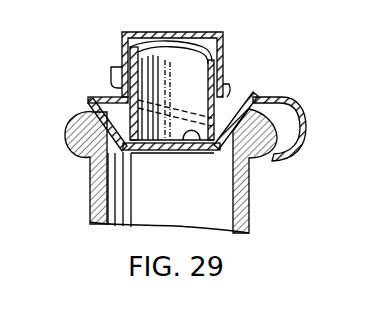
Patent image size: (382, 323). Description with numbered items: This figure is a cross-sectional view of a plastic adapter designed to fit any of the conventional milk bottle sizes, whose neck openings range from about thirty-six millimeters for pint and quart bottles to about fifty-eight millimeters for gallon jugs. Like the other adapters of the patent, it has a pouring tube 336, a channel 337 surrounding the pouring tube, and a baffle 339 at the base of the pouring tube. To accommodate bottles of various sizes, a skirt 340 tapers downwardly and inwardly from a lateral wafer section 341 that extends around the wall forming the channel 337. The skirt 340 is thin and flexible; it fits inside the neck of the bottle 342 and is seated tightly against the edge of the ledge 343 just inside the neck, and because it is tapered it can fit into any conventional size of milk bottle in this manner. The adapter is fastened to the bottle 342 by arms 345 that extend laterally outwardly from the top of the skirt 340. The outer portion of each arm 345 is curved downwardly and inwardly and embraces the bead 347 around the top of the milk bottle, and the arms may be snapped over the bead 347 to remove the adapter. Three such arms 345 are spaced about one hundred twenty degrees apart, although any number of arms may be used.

The pouring tube 336 is at (183, 67).
The channel 337 is at (111, 84).
The baffle 339 is at (188, 141).
The skirt 340 is at (155, 151).
The lateral wafer section 341 is at (229, 91).
The bottle 342 is at (228, 210).
The ledge 343 is at (81, 114).
The arms 345 is at (291, 103).
The bead 347 is at (71, 137).